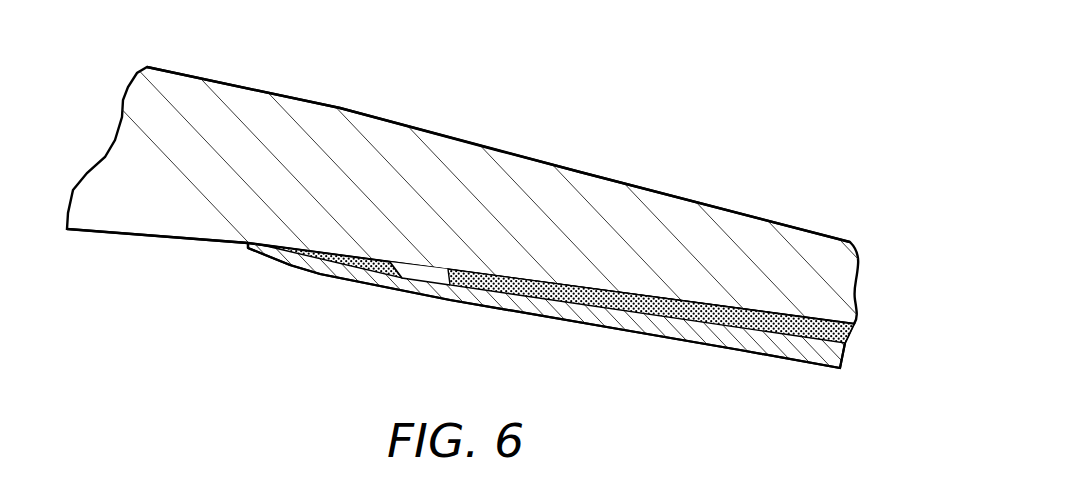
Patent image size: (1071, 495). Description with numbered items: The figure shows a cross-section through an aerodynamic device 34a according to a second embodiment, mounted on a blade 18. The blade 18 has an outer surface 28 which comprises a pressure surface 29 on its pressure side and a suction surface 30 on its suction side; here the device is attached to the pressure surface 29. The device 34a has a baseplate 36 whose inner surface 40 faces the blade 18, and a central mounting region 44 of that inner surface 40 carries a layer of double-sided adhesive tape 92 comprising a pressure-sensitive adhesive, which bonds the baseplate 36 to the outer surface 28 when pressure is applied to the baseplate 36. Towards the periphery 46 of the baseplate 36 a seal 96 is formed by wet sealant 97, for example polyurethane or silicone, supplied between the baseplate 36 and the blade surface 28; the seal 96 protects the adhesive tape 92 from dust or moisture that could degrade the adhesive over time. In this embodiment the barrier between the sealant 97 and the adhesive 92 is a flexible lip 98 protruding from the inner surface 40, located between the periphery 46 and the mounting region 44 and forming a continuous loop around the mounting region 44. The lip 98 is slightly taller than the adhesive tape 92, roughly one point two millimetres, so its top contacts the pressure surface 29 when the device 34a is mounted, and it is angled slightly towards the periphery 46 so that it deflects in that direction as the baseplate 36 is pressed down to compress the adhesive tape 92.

The blade 18 is at (118, 101).
The suction surface 30 is at (330, 106).
The outer surface 28 is at (589, 169).
The pressure surface 29 is at (101, 234).
The aerodynamic device 34a is at (652, 353).
The baseplate 36 is at (695, 340).
The inner surface 40 is at (748, 333).
The mounting region 44 is at (588, 310).
The periphery 46 is at (245, 254).
The double-sided adhesive tape 92 is at (530, 292).
The seal 96 is at (338, 266).
The sealant 97 is at (300, 262).
The flexible lip 98 is at (400, 262).